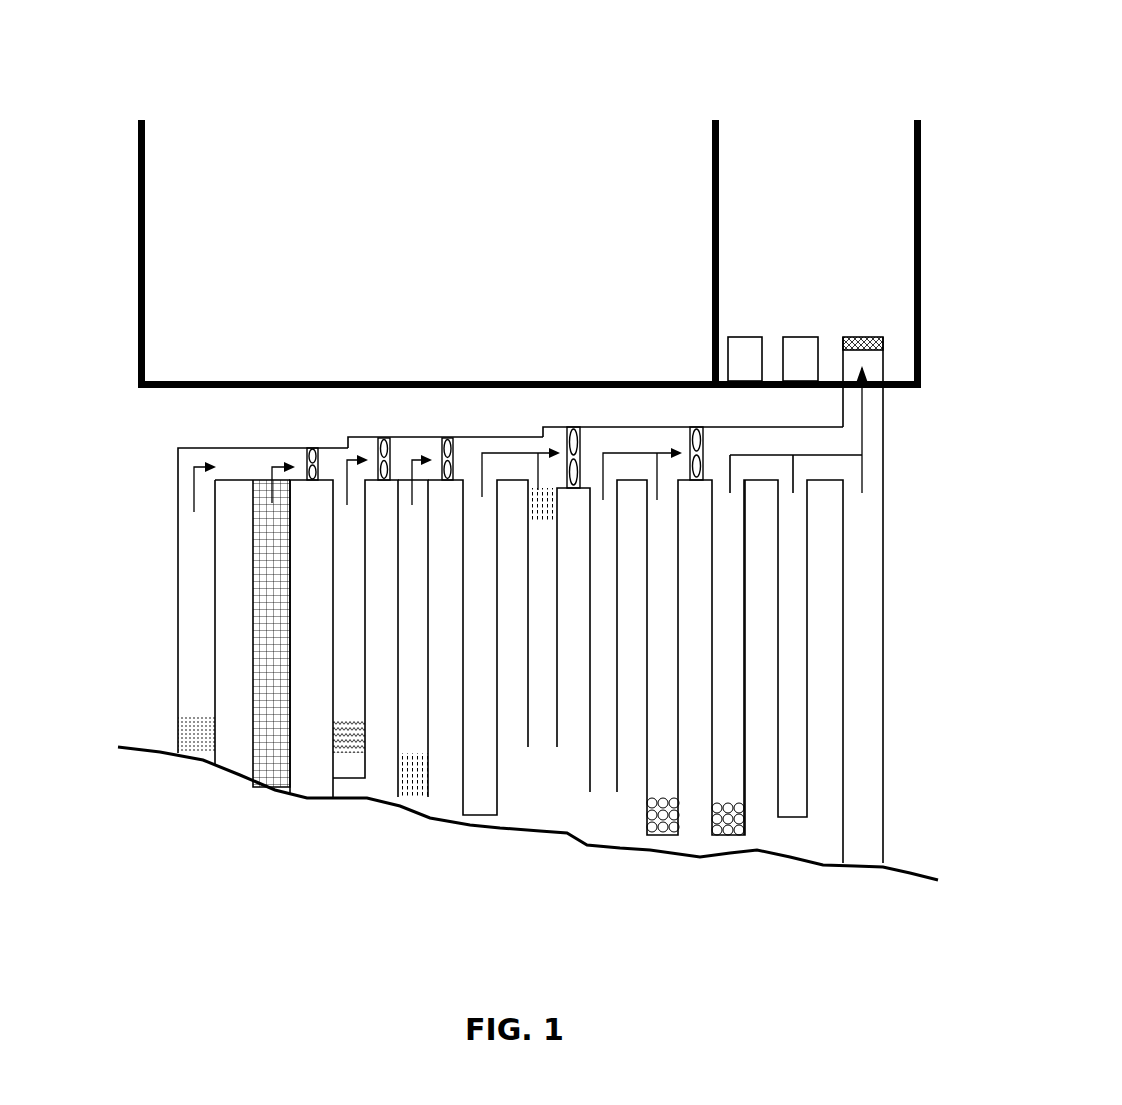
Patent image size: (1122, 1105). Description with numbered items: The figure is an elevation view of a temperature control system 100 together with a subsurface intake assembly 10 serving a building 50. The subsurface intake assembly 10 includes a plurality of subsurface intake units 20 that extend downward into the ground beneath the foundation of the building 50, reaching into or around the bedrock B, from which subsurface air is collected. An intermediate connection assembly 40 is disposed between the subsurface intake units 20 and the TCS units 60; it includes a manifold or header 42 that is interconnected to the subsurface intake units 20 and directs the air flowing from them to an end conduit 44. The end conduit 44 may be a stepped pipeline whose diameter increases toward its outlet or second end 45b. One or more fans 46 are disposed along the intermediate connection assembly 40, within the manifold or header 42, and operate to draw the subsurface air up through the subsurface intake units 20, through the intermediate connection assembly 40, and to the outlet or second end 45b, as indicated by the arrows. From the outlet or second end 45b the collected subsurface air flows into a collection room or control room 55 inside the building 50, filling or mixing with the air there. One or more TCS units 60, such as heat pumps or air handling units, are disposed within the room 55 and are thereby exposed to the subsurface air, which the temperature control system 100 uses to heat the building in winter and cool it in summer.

The temperature control system 100 is at (510, 58).
The subsurface intake assembly 10 is at (897, 577).
The subsurface intake units 20 is at (843, 815).
The intermediate connection assembly 40 is at (288, 427).
The manifold or header 42 is at (500, 412).
The end conduit 44 is at (630, 425).
The outlet or second end 45b is at (883, 367).
The fans 46 is at (309, 448).
The building 50 is at (140, 170).
The collection room or control room 55 is at (800, 153).
The TCS units 60 is at (795, 337).
The bedrock B is at (518, 813).